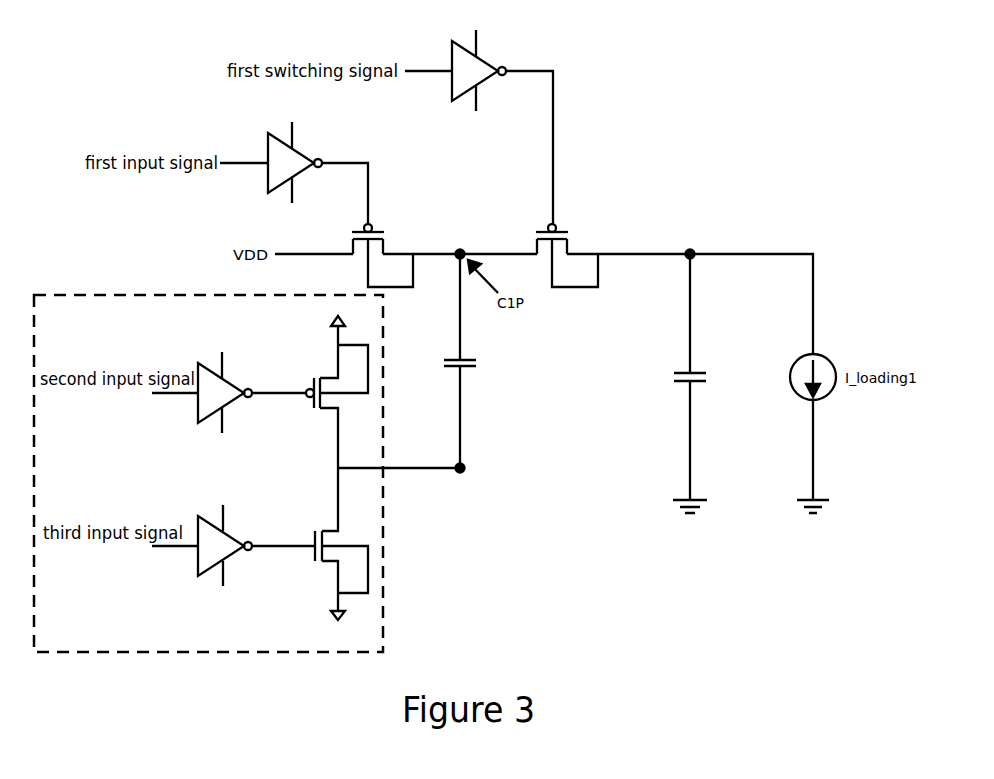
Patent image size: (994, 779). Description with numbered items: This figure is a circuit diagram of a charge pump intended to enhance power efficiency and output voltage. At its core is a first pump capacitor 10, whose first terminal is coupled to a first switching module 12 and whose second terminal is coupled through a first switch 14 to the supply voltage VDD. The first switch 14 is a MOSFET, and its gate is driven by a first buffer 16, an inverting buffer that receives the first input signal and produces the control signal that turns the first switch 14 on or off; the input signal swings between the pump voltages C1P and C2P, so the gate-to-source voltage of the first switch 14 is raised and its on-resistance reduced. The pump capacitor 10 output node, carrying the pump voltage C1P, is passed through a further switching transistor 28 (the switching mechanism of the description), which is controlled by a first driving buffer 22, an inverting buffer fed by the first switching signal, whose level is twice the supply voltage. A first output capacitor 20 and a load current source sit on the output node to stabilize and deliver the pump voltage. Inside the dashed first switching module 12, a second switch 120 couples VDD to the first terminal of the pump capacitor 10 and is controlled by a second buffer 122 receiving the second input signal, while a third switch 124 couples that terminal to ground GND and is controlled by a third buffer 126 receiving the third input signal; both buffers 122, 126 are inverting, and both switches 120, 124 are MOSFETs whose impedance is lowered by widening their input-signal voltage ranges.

The first pump capacitor 10 is at (467, 357).
The first switching module 12 is at (383, 630).
The first switch 14 is at (385, 245).
The first buffer 16 is at (304, 153).
The first output capacitor 20 is at (697, 373).
The first driving buffer 22 is at (488, 62).
The second switch transistor 28 is at (570, 245).
The second switch 120 is at (369, 367).
The second buffer 122 is at (235, 384).
The third switch 124 is at (369, 568).
The third buffer 126 is at (237, 538).